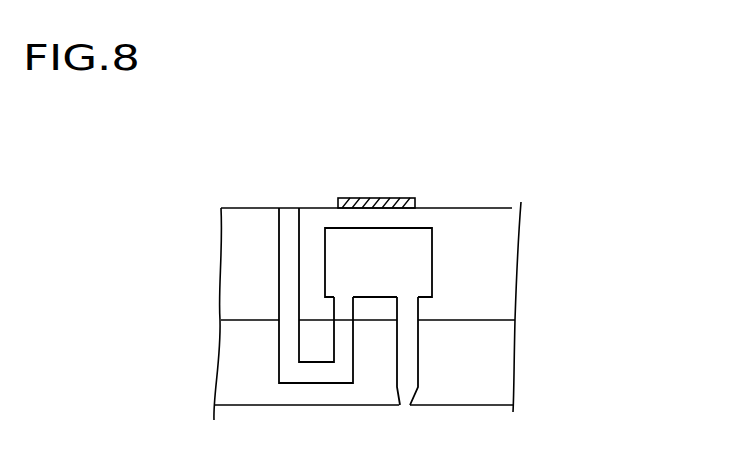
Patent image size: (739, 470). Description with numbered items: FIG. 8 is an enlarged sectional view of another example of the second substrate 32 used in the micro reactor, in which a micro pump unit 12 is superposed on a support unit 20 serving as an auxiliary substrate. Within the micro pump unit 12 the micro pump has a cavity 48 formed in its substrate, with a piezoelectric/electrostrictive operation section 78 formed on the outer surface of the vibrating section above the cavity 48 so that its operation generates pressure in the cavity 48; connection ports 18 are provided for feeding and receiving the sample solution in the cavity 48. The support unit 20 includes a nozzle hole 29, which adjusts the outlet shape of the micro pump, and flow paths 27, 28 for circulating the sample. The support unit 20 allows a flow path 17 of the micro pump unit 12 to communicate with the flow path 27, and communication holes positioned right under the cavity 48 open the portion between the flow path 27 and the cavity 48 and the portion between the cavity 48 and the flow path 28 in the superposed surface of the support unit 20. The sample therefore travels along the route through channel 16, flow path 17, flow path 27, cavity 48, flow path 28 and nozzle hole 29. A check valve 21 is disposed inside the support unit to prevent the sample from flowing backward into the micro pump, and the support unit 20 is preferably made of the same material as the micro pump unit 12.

The micro pump unit 12 is at (490, 243).
The support unit 20 is at (388, 370).
The second substrate 32 is at (421, 311).
The through channel 16 is at (295, 264).
The flow path 17 is at (280, 262).
The connection ports 18 is at (344, 313).
The cavity 48 is at (392, 268).
The piezoelectric/electrostrictive operation section 78 is at (398, 203).
The flow path 28 is at (408, 357).
The nozzle hole 29 is at (408, 397).
The flow path 27 is at (288, 385).
The check valve 21 is at (351, 322).